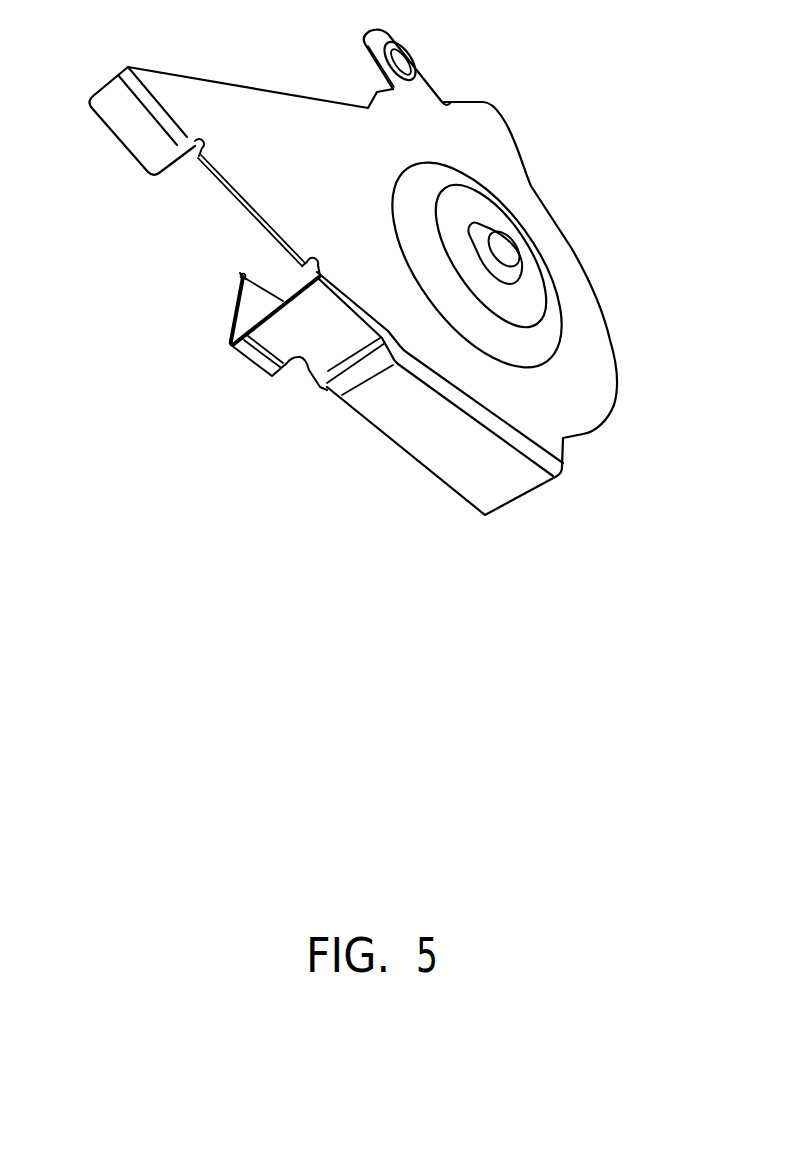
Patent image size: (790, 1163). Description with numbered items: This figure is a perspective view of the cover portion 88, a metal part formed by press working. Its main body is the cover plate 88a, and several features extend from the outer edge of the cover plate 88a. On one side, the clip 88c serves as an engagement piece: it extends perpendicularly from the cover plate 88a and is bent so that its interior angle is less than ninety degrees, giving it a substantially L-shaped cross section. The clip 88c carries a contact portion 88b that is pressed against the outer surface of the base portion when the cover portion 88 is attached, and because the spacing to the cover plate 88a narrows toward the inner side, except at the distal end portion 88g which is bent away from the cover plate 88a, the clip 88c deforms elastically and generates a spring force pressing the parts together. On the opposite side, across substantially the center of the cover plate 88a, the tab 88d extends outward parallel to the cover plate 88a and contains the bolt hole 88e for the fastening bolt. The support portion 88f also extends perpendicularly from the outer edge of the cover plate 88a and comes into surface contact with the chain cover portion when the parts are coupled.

The cover portion 88 is at (587, 149).
The cover plate 88a is at (295, 138).
The contact portion 88b is at (255, 308).
The clip 88c is at (273, 345).
The tab 88d is at (420, 80).
The bolt hole 88e is at (403, 59).
The support portion 88f is at (443, 446).
The distal end portion 88g is at (242, 274).